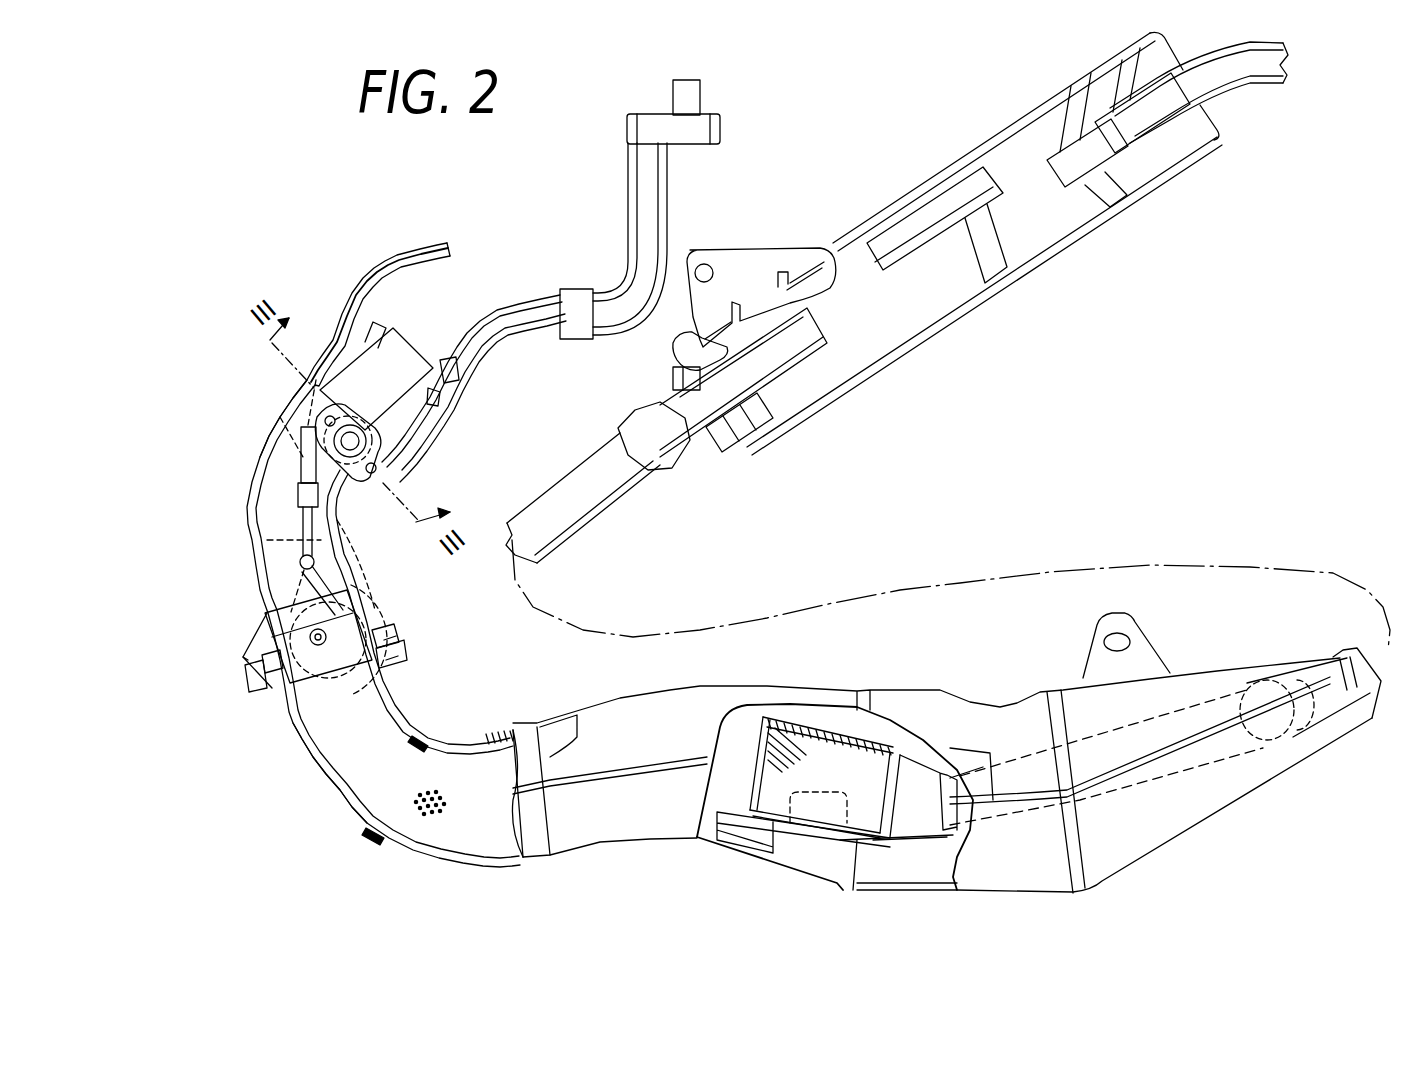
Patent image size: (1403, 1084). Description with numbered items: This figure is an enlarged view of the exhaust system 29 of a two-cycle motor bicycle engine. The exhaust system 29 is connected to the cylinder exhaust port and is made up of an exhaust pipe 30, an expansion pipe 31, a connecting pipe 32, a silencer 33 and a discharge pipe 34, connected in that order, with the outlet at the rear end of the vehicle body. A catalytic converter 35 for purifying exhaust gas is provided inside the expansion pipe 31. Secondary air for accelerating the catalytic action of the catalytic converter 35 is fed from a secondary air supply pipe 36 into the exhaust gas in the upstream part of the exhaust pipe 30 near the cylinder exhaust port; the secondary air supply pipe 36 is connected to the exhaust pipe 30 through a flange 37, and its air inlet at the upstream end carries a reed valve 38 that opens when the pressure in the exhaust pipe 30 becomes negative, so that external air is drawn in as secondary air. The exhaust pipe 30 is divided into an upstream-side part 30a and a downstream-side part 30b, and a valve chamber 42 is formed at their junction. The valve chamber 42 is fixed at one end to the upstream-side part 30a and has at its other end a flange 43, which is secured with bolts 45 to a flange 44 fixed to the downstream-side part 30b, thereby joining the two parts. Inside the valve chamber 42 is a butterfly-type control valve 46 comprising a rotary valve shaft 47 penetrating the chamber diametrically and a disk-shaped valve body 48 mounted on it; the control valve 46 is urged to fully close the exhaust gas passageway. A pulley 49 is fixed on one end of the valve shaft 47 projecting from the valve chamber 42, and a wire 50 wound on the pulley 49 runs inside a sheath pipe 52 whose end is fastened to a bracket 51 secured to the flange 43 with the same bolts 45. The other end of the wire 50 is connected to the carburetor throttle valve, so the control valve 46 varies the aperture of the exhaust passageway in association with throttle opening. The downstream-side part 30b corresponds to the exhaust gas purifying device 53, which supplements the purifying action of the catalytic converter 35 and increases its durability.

The exhaust system 29 is at (713, 861).
The exhaust pipe 30 is at (250, 483).
The upstream-side part 30a is at (290, 407).
The downstream-side part 30b is at (290, 735).
The expansion pipe 31 is at (790, 870).
The connecting pipe 32 is at (577, 533).
The silencer 33 is at (940, 327).
The discharge pipe 34 is at (1248, 92).
The catalytic converter 35 is at (875, 850).
The secondary air supply pipe 36 is at (460, 394).
The flange 37 is at (357, 400).
The reed valve 38 is at (686, 134).
The valve chamber 42 is at (367, 610).
The flange 43 is at (400, 640).
The flange 44 is at (400, 650).
The bolts 45 is at (250, 657).
The control valve 46 is at (367, 620).
The valve shaft 47 is at (330, 648).
The valve body 48 is at (313, 677).
The pulley 49 is at (378, 688).
The wire 50 is at (347, 543).
The bracket 51 is at (250, 623).
The sheath pipe 52 is at (350, 300).
The exhaust gas purifying device 53 is at (405, 797).